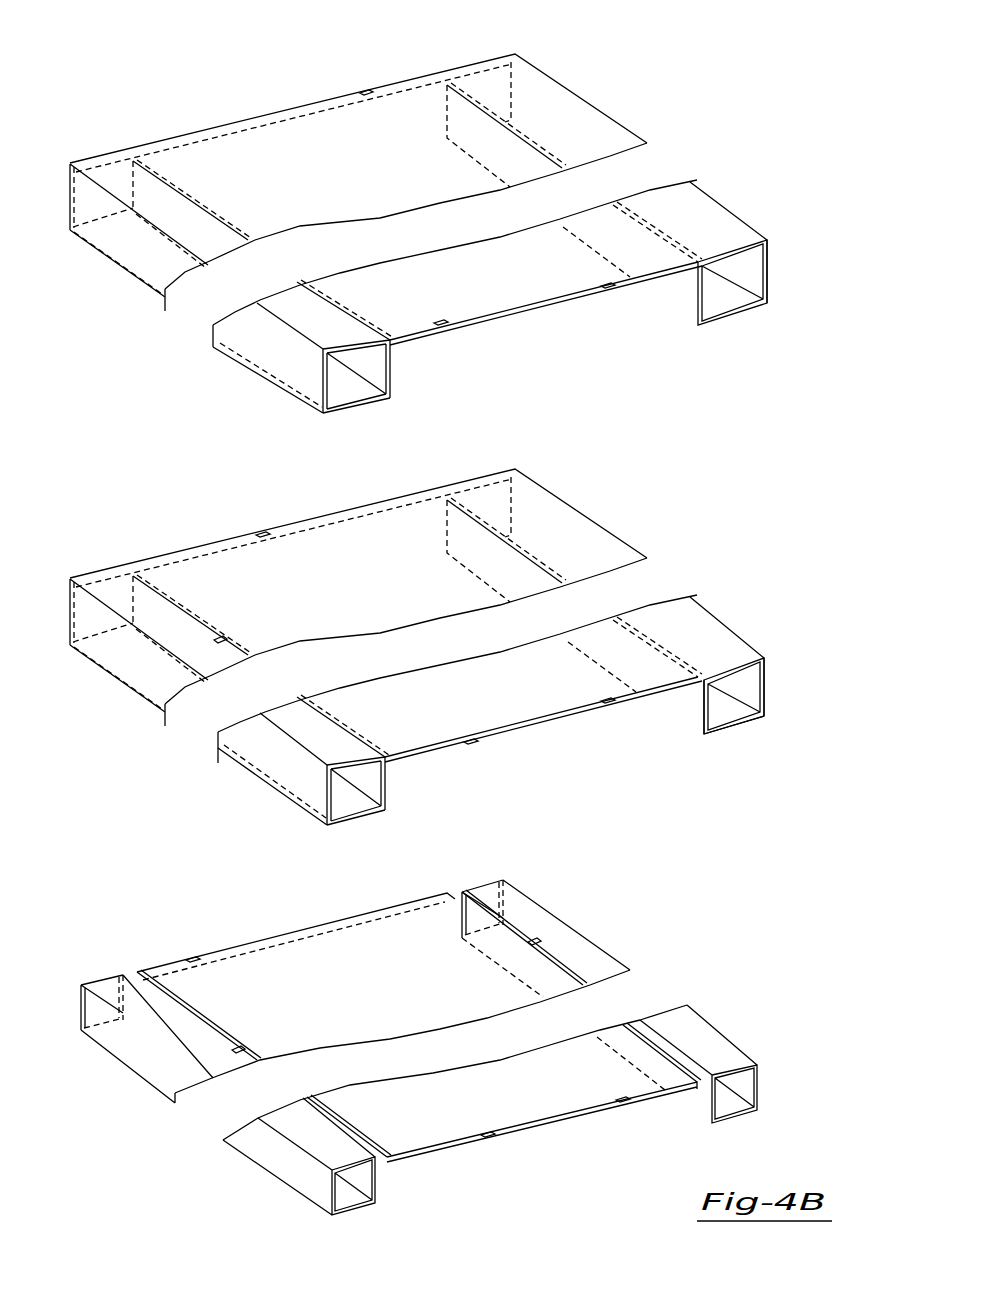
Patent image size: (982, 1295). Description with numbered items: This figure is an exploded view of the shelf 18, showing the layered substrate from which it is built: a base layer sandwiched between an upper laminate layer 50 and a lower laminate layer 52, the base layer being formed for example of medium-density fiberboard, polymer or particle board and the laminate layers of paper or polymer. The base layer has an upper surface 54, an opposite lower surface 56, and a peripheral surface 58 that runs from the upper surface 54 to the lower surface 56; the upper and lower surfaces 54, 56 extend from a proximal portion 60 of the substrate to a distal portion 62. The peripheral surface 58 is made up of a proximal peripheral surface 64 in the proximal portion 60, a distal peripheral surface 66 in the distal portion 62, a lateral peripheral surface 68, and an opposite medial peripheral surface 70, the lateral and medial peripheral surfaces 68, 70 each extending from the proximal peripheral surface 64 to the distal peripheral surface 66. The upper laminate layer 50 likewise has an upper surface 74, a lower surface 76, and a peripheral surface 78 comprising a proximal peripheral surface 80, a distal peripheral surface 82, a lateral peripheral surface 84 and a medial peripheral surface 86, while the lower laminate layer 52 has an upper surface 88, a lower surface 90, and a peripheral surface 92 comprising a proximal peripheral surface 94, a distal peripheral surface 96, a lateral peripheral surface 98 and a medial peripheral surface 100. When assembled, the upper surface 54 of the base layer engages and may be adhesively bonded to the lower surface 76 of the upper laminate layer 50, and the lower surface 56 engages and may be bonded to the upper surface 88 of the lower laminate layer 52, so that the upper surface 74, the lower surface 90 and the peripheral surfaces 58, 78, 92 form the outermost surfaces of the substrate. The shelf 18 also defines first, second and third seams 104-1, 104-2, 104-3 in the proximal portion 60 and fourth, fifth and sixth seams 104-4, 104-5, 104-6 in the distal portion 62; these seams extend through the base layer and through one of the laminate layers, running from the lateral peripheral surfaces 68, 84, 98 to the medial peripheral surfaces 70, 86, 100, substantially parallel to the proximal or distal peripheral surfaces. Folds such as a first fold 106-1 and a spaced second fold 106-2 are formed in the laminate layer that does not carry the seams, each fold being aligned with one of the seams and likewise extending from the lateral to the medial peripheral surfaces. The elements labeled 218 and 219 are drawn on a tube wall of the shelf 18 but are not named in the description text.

The shelf 18 is at (745, 103).
The upper laminate layer 50 is at (728, 212).
The lower laminate layer 52 is at (715, 1038).
The upper surface 54 is at (442, 719).
The lower surface 56 is at (234, 587).
The peripheral surface 58 is at (471, 741).
The proximal portion 60 is at (128, 247).
The distal portion 62 is at (770, 267).
The proximal peripheral surface 64 is at (218, 637).
The distal peripheral surface 66 is at (557, 566).
The lateral peripheral surface 68 is at (607, 702).
The medial peripheral surface 70 is at (262, 533).
The upper surface 74 is at (442, 293).
The lower surface 76 is at (305, 143).
The peripheral surface 78 is at (441, 323).
The proximal peripheral surface 80 is at (228, 224).
The distal peripheral surface 82 is at (528, 142).
The lateral peripheral surface 84 is at (607, 286).
The medial peripheral surface 86 is at (362, 92).
The upper surface 88 is at (447, 1118).
The lower surface 90 is at (328, 969).
The peripheral surface 92 is at (483, 1136).
The proximal peripheral surface 94 is at (238, 1048).
The distal peripheral surface 96 is at (533, 940).
The lateral peripheral surface 98 is at (625, 1100).
The medial peripheral surface 100 is at (192, 957).
The first seam 104-1 is at (386, 812).
The second seam 104-2 is at (331, 827).
The third seam 104-3 is at (326, 778).
The fourth seam 104-4 is at (706, 737).
The fifth seam 104-5 is at (757, 720).
The sixth seam 104-6 is at (766, 663).
The first fold 106-1 is at (392, 400).
The second fold 106-2 is at (323, 415).
The tube side wall 218 is at (393, 372).
The tube inner wall 219 is at (350, 414).